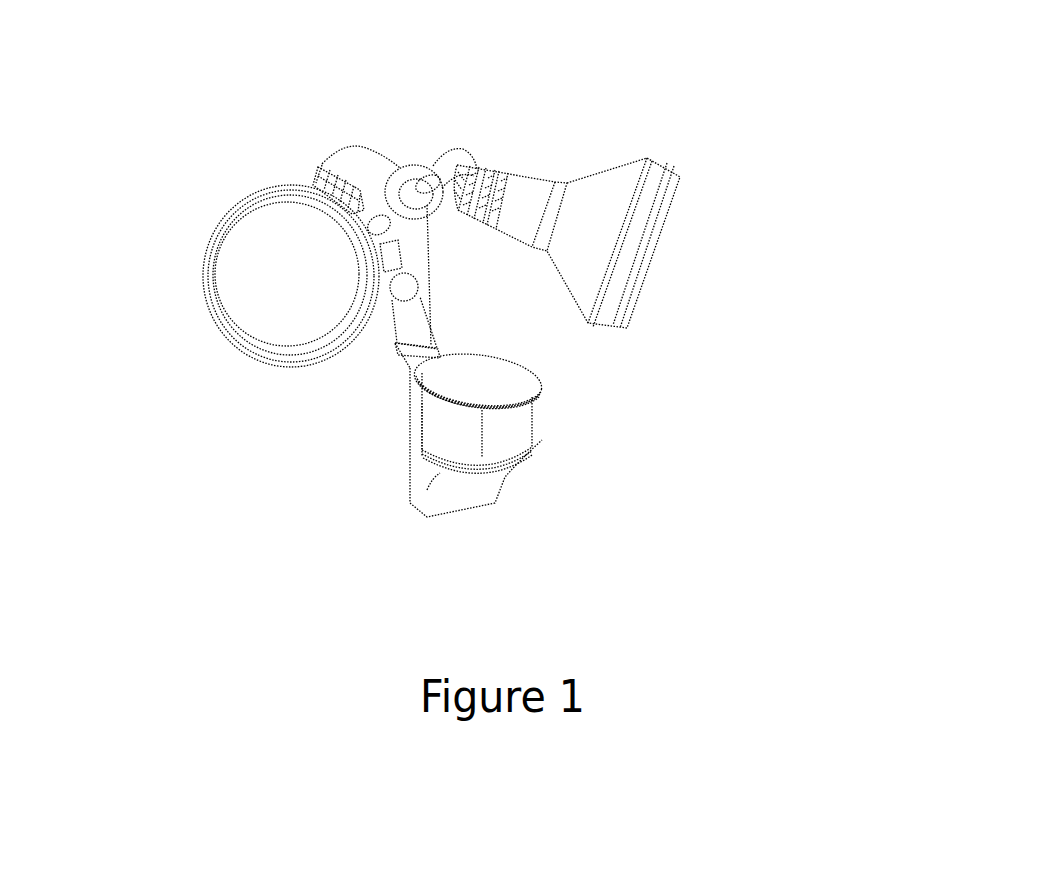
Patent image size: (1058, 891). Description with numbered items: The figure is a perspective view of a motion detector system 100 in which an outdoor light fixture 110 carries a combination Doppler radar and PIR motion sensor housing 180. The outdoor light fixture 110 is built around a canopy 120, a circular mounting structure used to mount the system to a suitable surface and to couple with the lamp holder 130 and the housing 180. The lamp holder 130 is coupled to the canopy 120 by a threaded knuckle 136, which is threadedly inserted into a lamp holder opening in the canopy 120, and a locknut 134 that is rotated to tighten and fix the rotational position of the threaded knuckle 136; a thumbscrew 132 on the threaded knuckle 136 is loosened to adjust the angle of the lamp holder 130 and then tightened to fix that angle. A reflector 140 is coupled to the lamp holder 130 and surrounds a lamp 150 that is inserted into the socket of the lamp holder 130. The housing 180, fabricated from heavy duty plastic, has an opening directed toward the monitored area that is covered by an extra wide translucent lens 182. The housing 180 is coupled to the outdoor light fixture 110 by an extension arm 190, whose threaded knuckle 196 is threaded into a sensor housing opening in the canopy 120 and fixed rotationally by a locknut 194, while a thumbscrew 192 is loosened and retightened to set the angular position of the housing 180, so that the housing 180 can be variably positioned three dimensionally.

The motion detector system 100 is at (781, 70).
The outdoor light fixture 110 is at (165, 111).
The canopy 120 is at (323, 167).
The lamp holder 130 is at (503, 236).
The thumbscrew 132 is at (453, 151).
The locknut 134 is at (397, 181).
The threaded knuckle 136 is at (413, 186).
The reflector 140 is at (600, 331).
The lamp 150 is at (666, 238).
The Doppler radar and PIR motion sensor housing 180 is at (413, 449).
The lens 182 is at (506, 449).
The extension arm 190 is at (401, 351).
The thumbscrew 192 is at (419, 281).
The locknut 194 is at (396, 260).
The threaded knuckle 196 is at (396, 272).